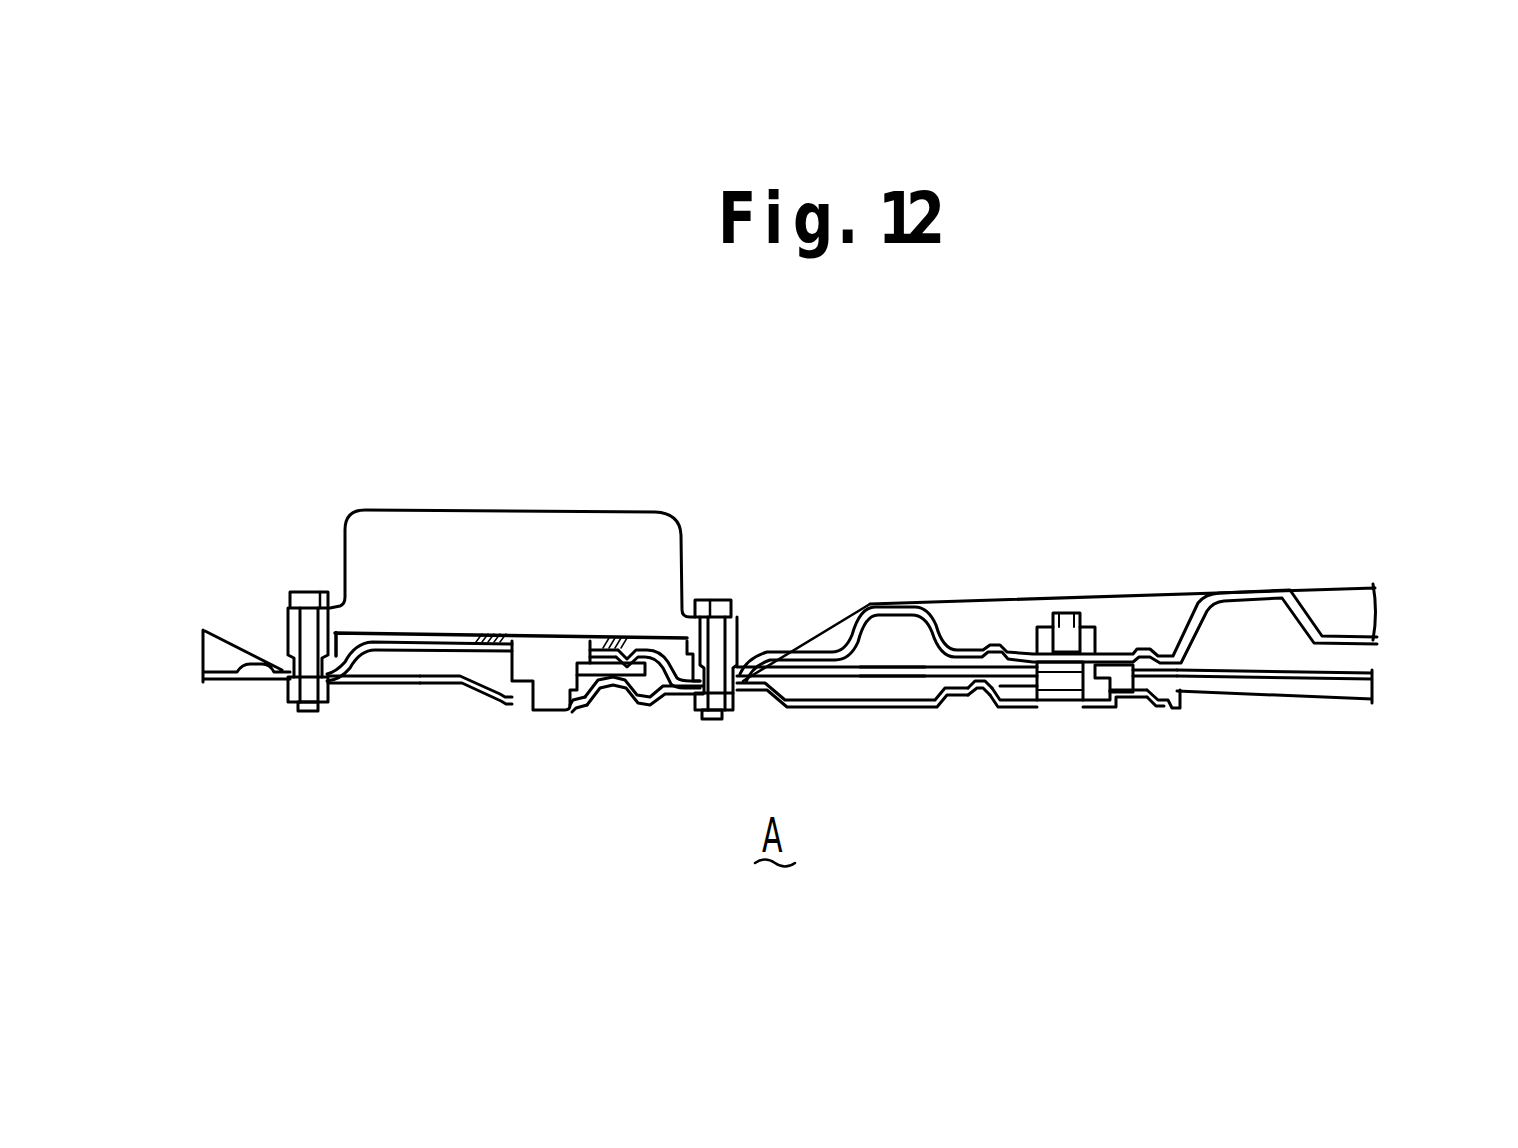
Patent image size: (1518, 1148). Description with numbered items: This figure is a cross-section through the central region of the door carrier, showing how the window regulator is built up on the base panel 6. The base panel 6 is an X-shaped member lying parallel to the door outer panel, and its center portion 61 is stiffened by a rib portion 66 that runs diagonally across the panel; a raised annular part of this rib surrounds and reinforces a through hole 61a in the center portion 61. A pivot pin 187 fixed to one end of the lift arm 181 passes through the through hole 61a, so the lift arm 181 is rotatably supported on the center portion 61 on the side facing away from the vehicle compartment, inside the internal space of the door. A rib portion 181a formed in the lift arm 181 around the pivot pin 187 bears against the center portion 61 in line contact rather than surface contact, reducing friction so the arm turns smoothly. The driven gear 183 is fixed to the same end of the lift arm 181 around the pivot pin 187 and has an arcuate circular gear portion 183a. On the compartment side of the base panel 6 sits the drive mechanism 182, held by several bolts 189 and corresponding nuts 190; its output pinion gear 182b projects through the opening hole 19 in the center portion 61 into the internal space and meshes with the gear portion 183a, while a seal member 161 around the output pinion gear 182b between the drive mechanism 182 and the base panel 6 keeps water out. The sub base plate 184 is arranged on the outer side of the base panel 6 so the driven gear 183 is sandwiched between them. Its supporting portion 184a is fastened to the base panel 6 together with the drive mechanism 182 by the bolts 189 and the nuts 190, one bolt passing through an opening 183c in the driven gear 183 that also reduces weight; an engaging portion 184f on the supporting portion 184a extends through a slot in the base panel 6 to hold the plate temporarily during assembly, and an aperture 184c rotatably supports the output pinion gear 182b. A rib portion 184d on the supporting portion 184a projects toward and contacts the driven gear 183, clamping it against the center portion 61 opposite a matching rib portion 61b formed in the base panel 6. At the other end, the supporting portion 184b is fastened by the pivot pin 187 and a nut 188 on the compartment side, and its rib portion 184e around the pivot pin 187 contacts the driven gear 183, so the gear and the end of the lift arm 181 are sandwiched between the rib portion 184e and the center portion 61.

The base panel 6 is at (1313, 621).
The opening holes 19 is at (490, 698).
The center portion 61 is at (1350, 637).
The through hole 61a is at (1073, 697).
The rib portion 61b is at (633, 648).
The rib portion 66 is at (1247, 591).
The seal member 161 is at (470, 632).
The lift arm 181 is at (1305, 683).
The rib portion 181a is at (1166, 664).
The drive mechanism 182 is at (530, 508).
The output pinion gear 182b is at (548, 692).
The driven gear 183 is at (913, 684).
The circular gear portion 183a is at (580, 655).
The opening 183c is at (891, 670).
The sub base plate 184 is at (840, 702).
The supporting portion 184a is at (400, 687).
The supporting portion 184b is at (1156, 712).
The aperture 184c is at (563, 702).
The rib portion 184d is at (618, 684).
The rib portion 184e is at (978, 697).
The engaging portion 184f is at (235, 682).
The pivot pin 187 is at (1082, 697).
The nut 188 is at (1090, 627).
The bolts 189 is at (302, 590).
The nuts 190 is at (309, 712).